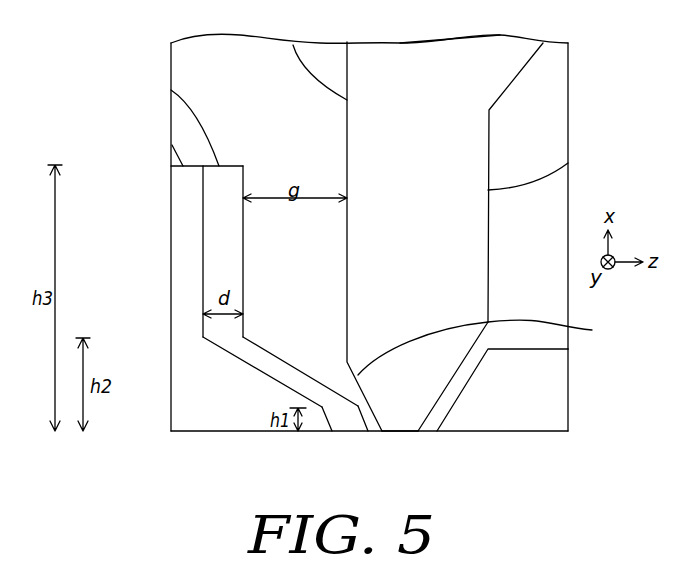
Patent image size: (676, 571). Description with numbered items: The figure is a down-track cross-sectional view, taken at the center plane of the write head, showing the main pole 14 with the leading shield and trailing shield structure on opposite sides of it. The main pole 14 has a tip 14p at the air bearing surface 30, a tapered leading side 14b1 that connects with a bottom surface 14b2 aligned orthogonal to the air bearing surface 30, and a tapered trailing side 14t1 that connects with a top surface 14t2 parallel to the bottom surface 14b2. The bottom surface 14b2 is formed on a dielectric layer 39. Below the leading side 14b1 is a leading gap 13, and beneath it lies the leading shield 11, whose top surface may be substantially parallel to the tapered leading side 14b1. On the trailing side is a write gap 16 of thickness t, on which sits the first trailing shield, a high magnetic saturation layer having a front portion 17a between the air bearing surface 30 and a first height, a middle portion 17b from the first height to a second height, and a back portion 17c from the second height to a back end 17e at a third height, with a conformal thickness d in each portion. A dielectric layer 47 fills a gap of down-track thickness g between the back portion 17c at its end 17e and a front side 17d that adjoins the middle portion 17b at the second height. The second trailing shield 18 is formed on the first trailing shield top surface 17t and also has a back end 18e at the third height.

The leading shield 11 is at (552, 388).
The leading gap 13 is at (435, 417).
The main pole 14 is at (452, 67).
The main pole tip 14p is at (403, 431).
The main pole trailing side 14t1 is at (499, 345).
The main pole top surface 14t2 is at (293, 45).
The main pole leading side 14b1 is at (455, 377).
The main pole bottom surface 14b2 is at (568, 163).
The write gap 16 is at (372, 420).
The first trailing shield front portion 17a is at (347, 418).
The first trailing shield middle portion 17b is at (267, 363).
The first trailing shield back portion 17c is at (219, 206).
The side surface of projection 17d is at (243, 296).
The first trailing shield back end 17e is at (171, 90).
The first trailing shield top surface 17t is at (200, 255).
The second trailing shield 18 is at (178, 362).
The second trailing shield back end 18e is at (172, 145).
The air bearing surface 30 is at (162, 431).
The dielectric layer 39 is at (552, 105).
The dielectric layer 47 is at (185, 52).